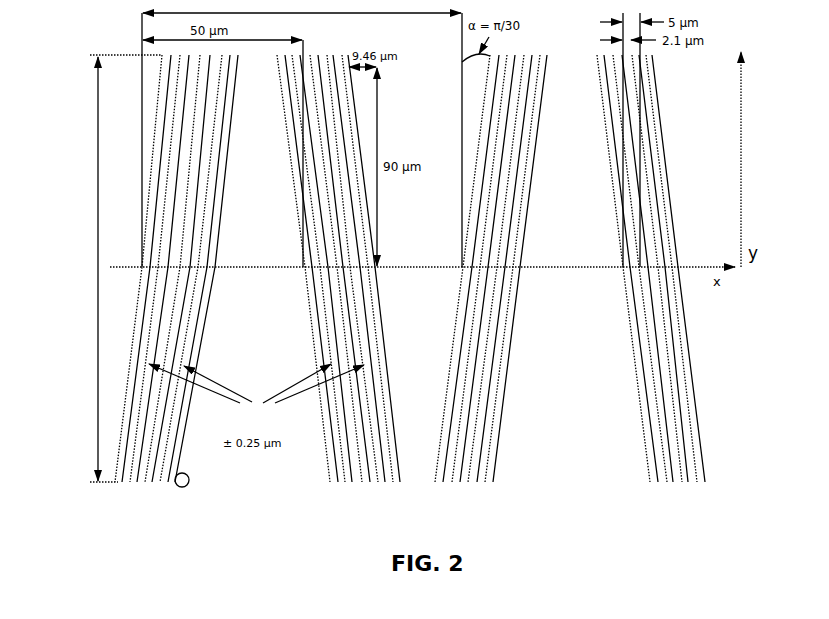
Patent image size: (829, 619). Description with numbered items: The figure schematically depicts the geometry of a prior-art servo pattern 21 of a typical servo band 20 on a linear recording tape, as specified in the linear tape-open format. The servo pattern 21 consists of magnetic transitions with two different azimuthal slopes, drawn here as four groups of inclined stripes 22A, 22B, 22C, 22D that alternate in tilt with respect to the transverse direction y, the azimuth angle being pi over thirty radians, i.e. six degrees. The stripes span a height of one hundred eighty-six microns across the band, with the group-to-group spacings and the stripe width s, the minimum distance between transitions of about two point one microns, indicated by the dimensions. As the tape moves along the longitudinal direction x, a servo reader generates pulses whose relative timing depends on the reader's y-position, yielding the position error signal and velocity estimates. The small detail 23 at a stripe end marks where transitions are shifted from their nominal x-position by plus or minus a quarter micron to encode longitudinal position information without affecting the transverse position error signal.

The servo band 20 is at (511, 497).
The servo pattern 21 is at (68, 57).
The first group of inclined strips 22A is at (143, 487).
The second group of inclined strips 22B is at (370, 489).
The third group of inclined strips 22C is at (505, 449).
The fourth group of inclined strips 22D is at (682, 400).
The strip end detail 23 is at (184, 487).